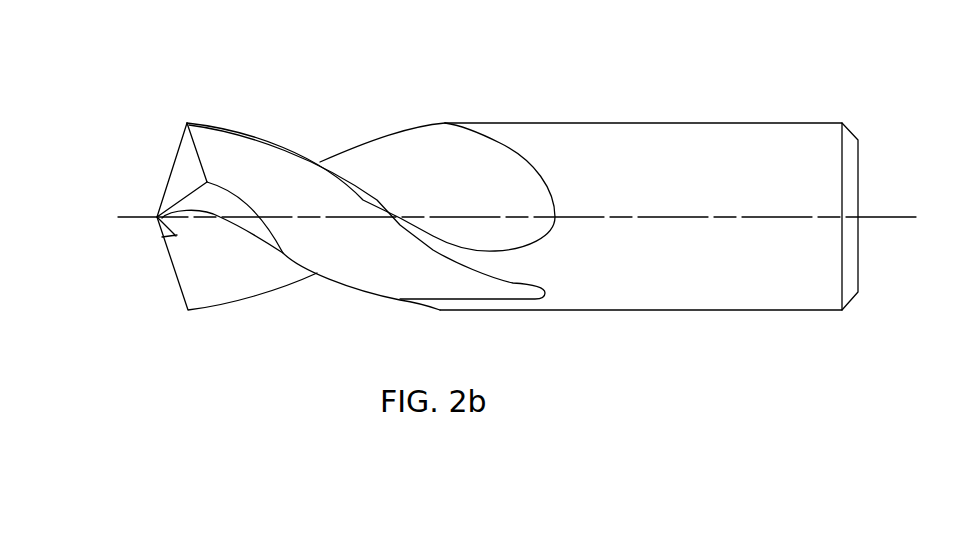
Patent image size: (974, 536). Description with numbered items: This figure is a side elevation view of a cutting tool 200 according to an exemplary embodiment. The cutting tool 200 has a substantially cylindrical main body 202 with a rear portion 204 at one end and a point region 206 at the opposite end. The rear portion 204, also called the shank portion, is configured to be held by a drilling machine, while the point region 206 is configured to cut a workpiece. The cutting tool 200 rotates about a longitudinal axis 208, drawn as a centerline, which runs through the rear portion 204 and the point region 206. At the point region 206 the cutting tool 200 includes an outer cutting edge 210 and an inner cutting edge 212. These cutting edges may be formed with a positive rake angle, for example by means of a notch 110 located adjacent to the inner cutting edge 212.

The cutting tool 200 is at (431, 100).
The main body 202 is at (658, 190).
The rear portion 204 is at (813, 122).
The point region 206 is at (157, 216).
The longitudinal axis 208 is at (872, 219).
The outer cutting edge 210 is at (183, 295).
The inner cutting edge 212 is at (157, 220).
The notch 110 is at (172, 245).